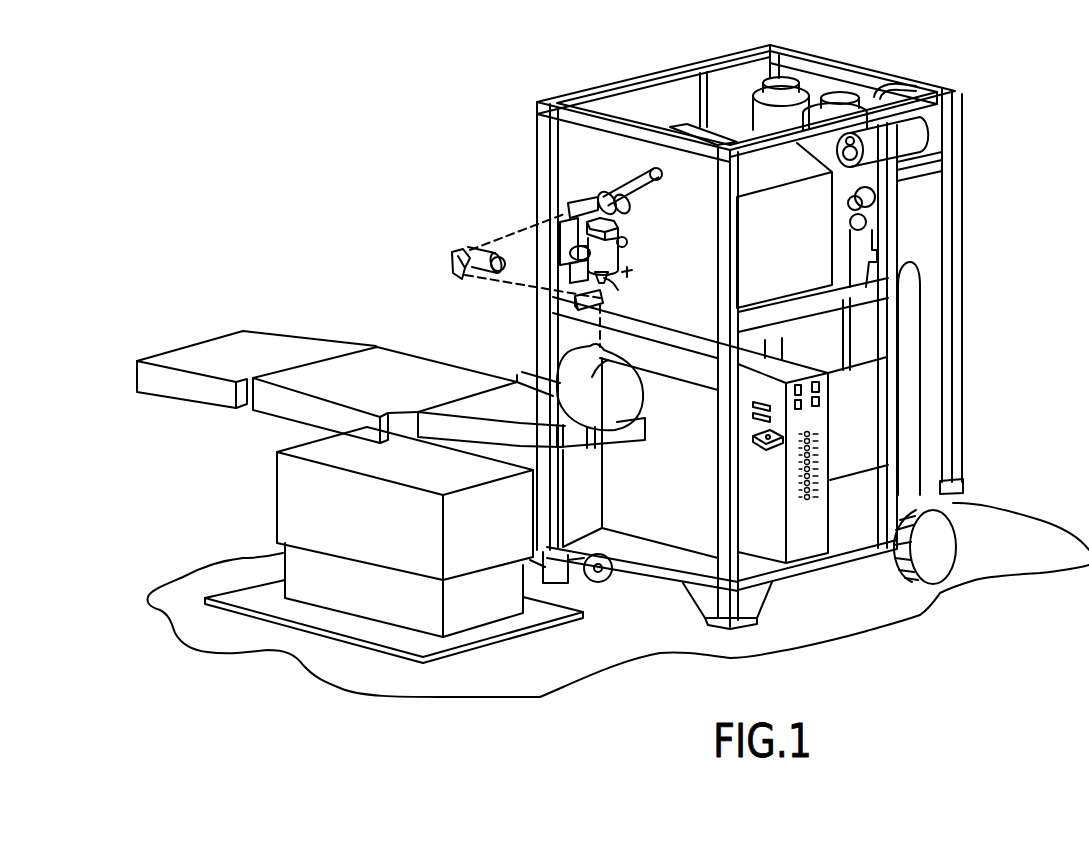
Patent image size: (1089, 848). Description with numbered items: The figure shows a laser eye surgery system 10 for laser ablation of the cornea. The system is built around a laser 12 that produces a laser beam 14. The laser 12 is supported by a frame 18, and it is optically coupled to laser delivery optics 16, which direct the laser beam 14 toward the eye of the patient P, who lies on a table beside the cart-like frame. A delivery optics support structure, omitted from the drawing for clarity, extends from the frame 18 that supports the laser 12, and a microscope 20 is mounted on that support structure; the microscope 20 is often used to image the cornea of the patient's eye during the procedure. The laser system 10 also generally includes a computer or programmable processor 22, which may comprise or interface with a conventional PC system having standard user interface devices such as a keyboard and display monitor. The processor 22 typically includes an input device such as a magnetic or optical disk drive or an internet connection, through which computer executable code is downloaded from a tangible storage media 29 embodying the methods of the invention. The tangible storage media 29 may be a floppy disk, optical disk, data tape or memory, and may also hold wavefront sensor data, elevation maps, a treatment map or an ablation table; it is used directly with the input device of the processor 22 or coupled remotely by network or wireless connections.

The laser eye surgery system 10 is at (298, 142).
The laser 12 is at (978, 196).
The laser beam 14 is at (517, 232).
The laser delivery optics 16 is at (583, 291).
The frame 18 is at (630, 80).
The microscope 20 is at (615, 221).
The processor 22 is at (831, 584).
The tangible storage media 29 is at (763, 448).
The patient P is at (637, 388).